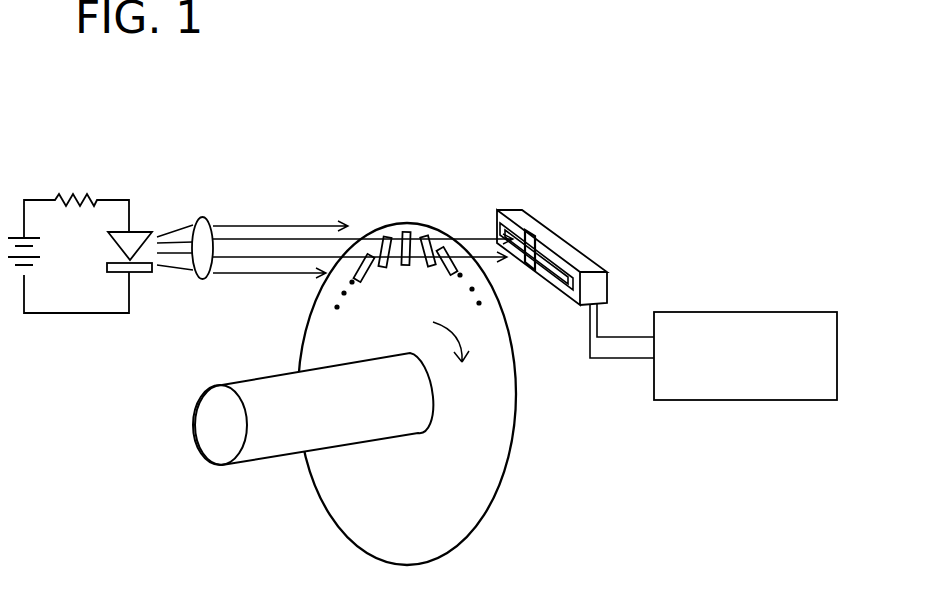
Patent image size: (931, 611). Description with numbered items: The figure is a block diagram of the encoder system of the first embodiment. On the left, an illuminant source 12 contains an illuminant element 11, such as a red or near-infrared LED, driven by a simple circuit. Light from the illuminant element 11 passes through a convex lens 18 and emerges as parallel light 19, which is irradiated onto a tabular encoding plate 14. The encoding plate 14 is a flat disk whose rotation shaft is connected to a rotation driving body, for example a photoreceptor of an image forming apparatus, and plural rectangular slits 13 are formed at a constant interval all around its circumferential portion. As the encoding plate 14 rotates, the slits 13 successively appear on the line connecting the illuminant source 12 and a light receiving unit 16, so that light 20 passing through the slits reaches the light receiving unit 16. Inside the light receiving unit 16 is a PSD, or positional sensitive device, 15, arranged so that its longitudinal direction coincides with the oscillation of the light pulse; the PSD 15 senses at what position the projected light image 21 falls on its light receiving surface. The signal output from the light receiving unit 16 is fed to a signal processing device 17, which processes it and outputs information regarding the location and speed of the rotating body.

The illuminant element 11 is at (137, 231).
The illuminant source 12 is at (88, 320).
The rectangular slits 13 is at (405, 230).
The tabular encoding plate 14 is at (495, 462).
The PSD (Positional Sensitive Device) 15 is at (499, 223).
The light receiving unit 16 is at (593, 258).
The signal processing device 17 is at (762, 312).
The convex lens 18 is at (203, 280).
The parallel light 19 is at (297, 223).
The transmitted light beam 20 is at (483, 236).
The projected light image 21 is at (534, 235).